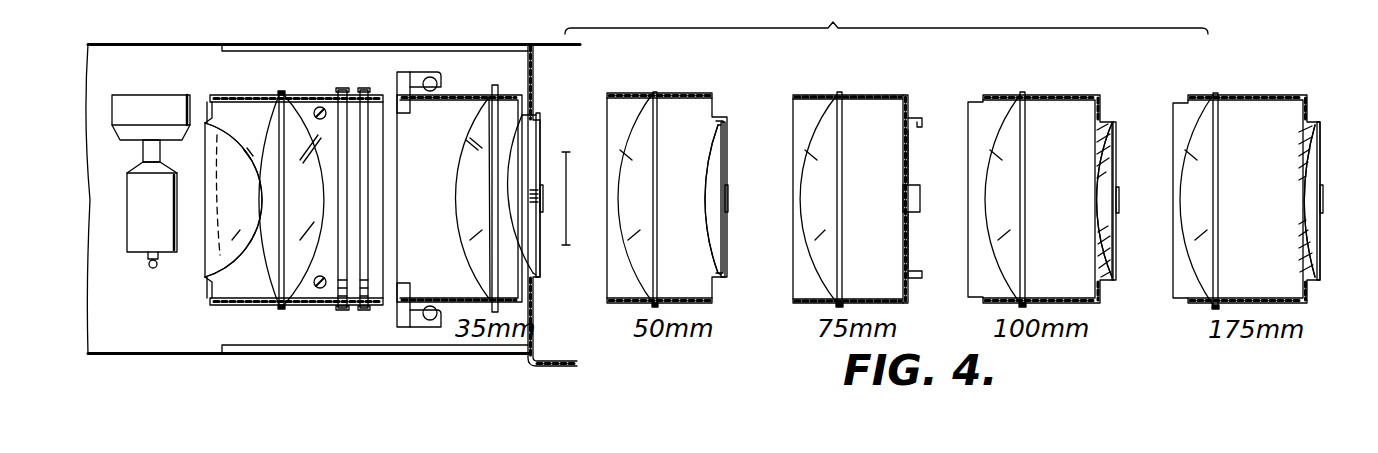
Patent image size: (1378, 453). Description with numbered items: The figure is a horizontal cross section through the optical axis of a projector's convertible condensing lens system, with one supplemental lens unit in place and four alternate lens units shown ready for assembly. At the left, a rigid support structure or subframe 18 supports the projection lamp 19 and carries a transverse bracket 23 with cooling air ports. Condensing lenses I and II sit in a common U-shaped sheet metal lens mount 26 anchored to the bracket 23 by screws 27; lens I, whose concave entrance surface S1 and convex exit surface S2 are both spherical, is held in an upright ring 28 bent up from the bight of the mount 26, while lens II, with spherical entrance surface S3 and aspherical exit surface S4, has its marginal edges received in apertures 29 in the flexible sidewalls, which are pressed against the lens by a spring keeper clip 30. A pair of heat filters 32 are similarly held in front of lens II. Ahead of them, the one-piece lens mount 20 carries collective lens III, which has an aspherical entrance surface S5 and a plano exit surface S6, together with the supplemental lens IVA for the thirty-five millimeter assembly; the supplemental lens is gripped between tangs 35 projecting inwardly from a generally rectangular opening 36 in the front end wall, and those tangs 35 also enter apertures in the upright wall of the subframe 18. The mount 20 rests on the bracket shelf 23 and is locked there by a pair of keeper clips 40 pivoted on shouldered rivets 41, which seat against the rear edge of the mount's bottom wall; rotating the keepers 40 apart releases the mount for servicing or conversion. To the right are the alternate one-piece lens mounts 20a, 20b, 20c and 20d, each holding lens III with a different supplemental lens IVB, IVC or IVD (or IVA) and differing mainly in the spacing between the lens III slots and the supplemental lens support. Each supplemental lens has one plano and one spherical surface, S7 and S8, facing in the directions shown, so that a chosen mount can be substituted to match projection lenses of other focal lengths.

The rigid support structure 18 is at (540, 330).
The projection lamp 19 is at (128, 238).
The one-piece lens mount 20 is at (452, 94).
The one-piece lens mount 20a is at (683, 96).
The one-piece lens mount 20b is at (880, 95).
The one-piece lens mount 20c is at (1055, 97).
The one-piece lens mount 20d is at (1260, 97).
The transverse bracket 23 is at (222, 323).
The lens mount 26 is at (253, 305).
The screws 27 is at (320, 107).
The upright ring 28 is at (199, 190).
The apertures 29 is at (283, 92).
The spring keeper clip 30 is at (495, 86).
The heat filters 32 is at (364, 89).
The tangs 35 is at (538, 120).
The rectangular opening 36 is at (908, 243).
The keeper clips 40 is at (398, 85).
The shouldered rivets 41 is at (441, 74).
The lens I is at (236, 240).
The lens II is at (291, 242).
The lens III is at (846, 157).
The supplemental lens IV A IVA is at (935, 179).
The supplemental lens IV B IVB is at (723, 253).
The supplemental lens IV C IVC is at (1110, 255).
The supplemental lens IV D IVD is at (1317, 250).
The lens surface S1 is at (217, 246).
The lens surface S2 is at (226, 127).
The front entrance surface S3 is at (267, 146).
The exit surface S4 is at (300, 282).
The aspherical entrance surface S5 is at (462, 153).
The plano exit surface S6 is at (505, 112).
The lens surface S7 is at (523, 113).
The lens surface S8 is at (539, 150).